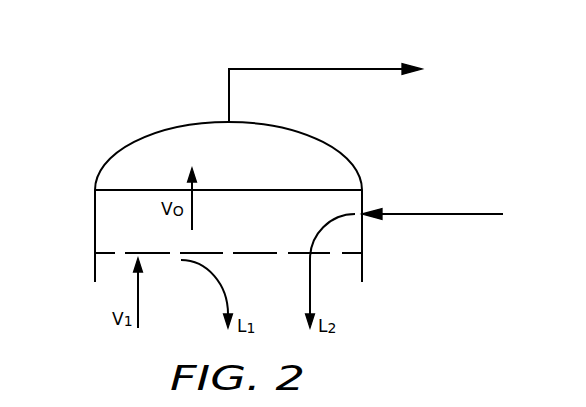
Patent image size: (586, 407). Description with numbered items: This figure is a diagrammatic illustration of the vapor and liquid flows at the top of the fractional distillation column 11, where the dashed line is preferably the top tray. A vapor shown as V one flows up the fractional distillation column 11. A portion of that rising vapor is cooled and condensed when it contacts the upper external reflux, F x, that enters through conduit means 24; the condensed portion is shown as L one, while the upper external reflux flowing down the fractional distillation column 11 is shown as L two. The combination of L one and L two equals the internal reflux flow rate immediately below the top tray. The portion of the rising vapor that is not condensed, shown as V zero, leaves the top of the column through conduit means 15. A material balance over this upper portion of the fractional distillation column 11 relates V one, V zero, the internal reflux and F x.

The fractional distillation column 11 is at (95, 215).
The conduit means 15 is at (340, 69).
The conduit means 24 is at (446, 216).